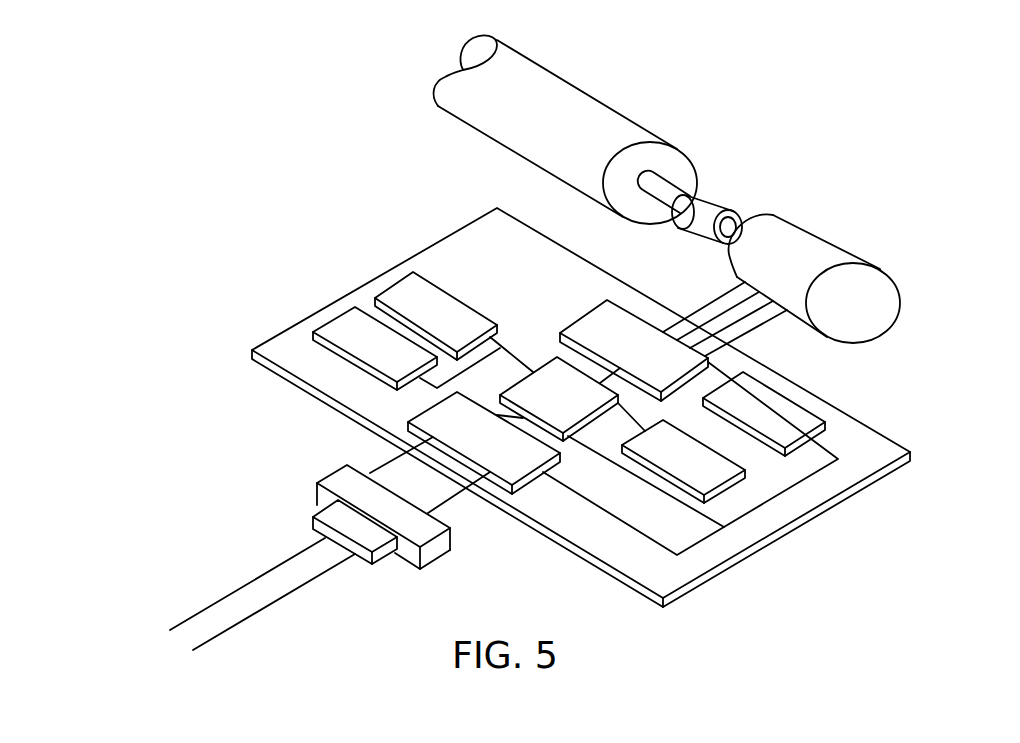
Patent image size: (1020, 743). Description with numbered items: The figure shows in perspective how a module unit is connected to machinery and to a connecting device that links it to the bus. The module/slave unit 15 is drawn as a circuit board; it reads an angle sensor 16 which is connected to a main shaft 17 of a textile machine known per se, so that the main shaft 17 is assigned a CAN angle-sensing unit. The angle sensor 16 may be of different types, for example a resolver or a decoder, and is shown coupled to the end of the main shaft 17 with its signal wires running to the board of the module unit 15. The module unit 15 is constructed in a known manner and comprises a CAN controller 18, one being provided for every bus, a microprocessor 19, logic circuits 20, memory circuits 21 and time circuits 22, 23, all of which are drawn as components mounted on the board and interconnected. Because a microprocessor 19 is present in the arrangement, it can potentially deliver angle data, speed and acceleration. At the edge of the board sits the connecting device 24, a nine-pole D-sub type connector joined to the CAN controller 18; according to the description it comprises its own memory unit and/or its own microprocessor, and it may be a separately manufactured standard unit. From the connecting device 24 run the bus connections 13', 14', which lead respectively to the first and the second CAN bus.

The module/slave unit 15 is at (735, 583).
The angle sensor 16 is at (842, 228).
The main shaft 17 is at (637, 106).
The CAN controller 18 is at (530, 460).
The microprocessor 19 is at (550, 370).
The logic circuits 20 is at (397, 290).
The memory circuits 21 is at (330, 332).
The time circuits 22 is at (740, 475).
The time circuits 23 is at (803, 420).
The connecting device 24 is at (296, 483).
The bus connection 13' is at (236, 582).
The bus connection 14' is at (273, 614).